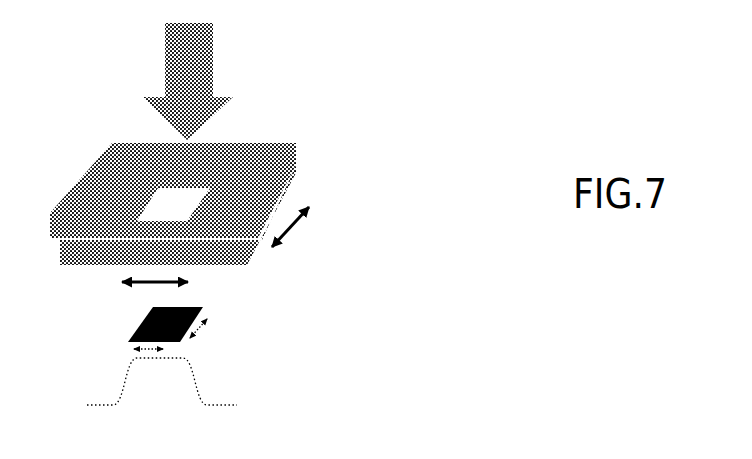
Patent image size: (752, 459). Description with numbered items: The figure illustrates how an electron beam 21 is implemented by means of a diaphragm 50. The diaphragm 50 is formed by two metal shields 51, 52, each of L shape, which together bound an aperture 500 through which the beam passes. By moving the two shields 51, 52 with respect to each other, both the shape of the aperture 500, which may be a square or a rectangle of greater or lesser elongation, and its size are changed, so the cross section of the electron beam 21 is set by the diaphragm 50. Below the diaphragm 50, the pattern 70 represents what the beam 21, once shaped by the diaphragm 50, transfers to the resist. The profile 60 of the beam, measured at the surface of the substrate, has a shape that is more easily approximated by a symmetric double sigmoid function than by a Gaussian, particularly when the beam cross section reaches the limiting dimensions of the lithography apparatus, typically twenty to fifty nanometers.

The electron beam 21 is at (203, 50).
The diaphragm 50 is at (207, 160).
The metal shield 51 is at (92, 152).
The metal shield 52 is at (286, 178).
The aperture 500 is at (177, 206).
The profile 60 is at (130, 385).
The pattern 70 is at (143, 311).